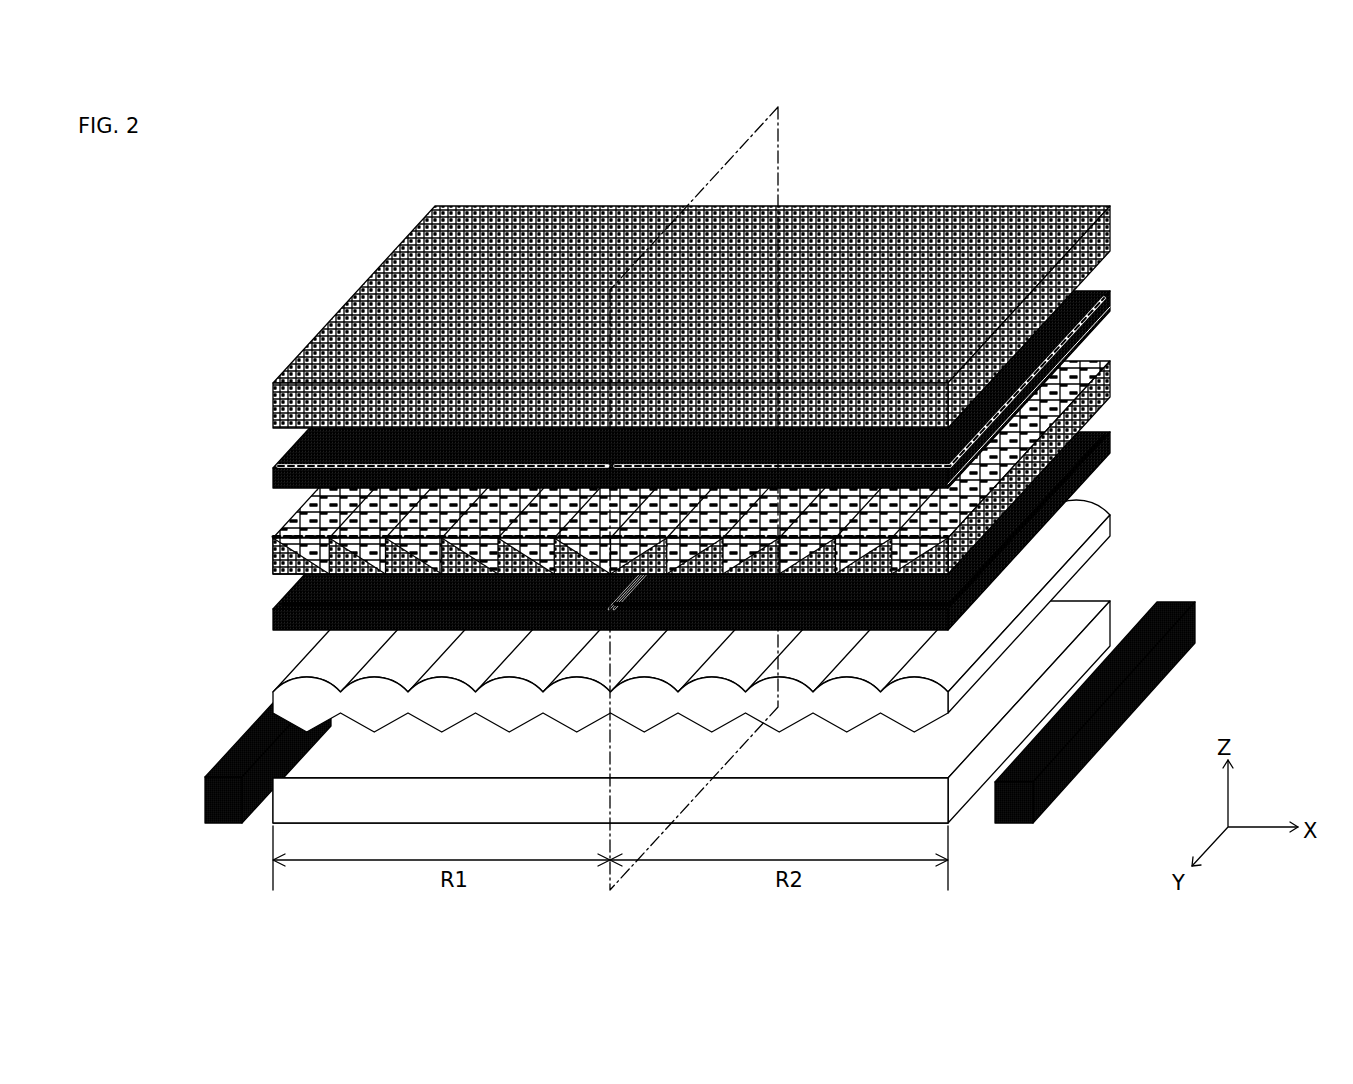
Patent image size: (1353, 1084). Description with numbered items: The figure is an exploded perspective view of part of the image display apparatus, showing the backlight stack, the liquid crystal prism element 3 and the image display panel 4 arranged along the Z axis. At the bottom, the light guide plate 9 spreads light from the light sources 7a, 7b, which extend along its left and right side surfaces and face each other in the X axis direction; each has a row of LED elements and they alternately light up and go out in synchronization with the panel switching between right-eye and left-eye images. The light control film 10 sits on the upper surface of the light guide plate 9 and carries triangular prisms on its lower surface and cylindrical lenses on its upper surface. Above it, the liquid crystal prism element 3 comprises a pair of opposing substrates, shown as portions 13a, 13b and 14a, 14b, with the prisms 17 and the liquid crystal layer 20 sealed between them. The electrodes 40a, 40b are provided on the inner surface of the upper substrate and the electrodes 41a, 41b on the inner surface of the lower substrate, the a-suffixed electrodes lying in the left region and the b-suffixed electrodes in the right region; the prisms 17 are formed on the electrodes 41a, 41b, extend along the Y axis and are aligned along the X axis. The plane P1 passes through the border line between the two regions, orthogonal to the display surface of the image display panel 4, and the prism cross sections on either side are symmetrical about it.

The image display panel 4 is at (1112, 232).
The opposing substrate 13a is at (275, 463).
The opposing substrate 13b is at (1112, 306).
The electrode 40a is at (275, 490).
The electrode 40b is at (1097, 341).
The liquid crystal prism element 3 is at (1112, 381).
The liquid crystal layer 20 is at (298, 527).
The prisms 17 is at (275, 562).
The opposing substrate 14a is at (275, 627).
The opposing substrate 14b is at (1112, 443).
The electrode 41a is at (283, 604).
The electrode 41b is at (1097, 466).
The light control film 10 is at (1112, 521).
The light guide plate 9 is at (1090, 602).
The light source 7a is at (218, 825).
The light source 7b is at (1015, 825).
The plane P1 is at (780, 121).